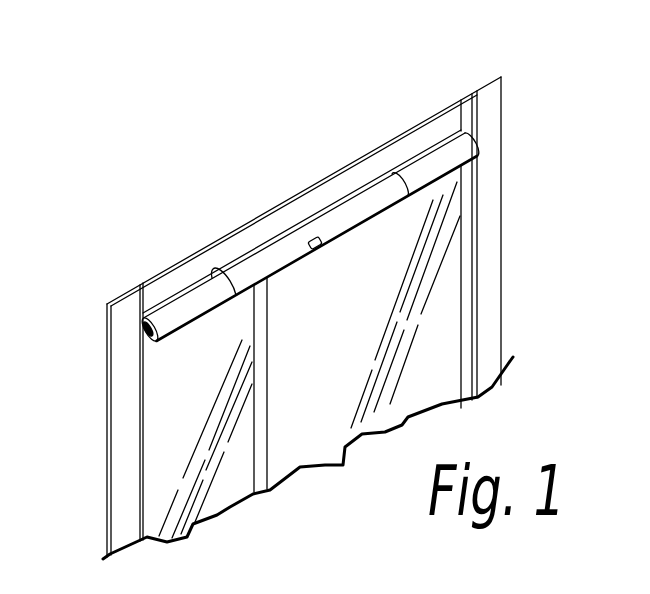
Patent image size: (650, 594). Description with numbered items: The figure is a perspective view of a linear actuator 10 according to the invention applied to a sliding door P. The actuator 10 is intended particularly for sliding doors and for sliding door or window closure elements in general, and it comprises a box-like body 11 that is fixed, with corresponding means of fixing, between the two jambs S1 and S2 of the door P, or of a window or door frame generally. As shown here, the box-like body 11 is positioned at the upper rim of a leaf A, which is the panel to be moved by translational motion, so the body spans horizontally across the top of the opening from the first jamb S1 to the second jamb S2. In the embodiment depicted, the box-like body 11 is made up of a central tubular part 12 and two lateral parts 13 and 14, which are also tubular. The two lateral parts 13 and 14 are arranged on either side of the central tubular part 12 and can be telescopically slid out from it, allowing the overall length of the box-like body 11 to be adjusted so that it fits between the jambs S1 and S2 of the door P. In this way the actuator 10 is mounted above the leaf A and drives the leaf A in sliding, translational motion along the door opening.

The door P is at (155, 260).
The linear actuator 10 is at (292, 210).
The box-like body 11 is at (366, 213).
The central tubular part 12 is at (343, 226).
The lateral part 13 is at (201, 300).
The lateral part 14 is at (450, 160).
The jamb S1 is at (128, 464).
The jamb S2 is at (492, 254).
The leaf A is at (331, 370).